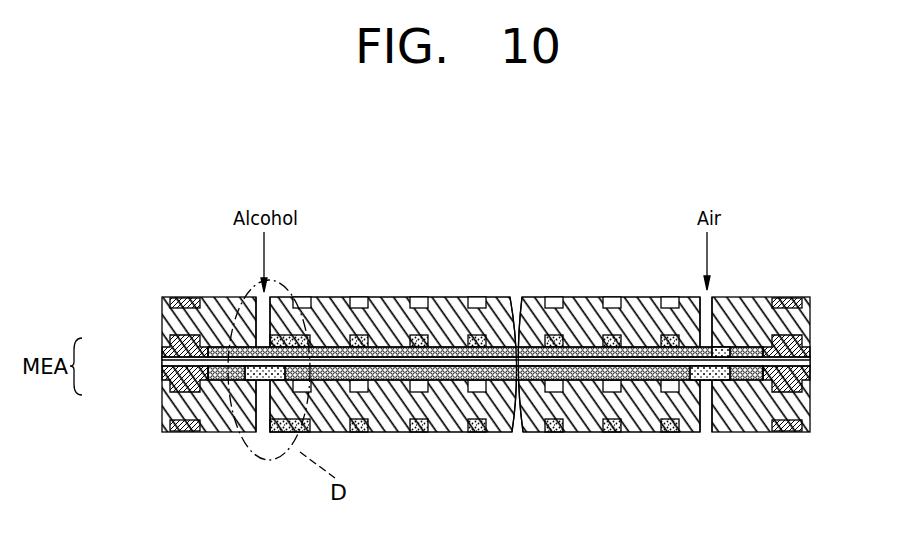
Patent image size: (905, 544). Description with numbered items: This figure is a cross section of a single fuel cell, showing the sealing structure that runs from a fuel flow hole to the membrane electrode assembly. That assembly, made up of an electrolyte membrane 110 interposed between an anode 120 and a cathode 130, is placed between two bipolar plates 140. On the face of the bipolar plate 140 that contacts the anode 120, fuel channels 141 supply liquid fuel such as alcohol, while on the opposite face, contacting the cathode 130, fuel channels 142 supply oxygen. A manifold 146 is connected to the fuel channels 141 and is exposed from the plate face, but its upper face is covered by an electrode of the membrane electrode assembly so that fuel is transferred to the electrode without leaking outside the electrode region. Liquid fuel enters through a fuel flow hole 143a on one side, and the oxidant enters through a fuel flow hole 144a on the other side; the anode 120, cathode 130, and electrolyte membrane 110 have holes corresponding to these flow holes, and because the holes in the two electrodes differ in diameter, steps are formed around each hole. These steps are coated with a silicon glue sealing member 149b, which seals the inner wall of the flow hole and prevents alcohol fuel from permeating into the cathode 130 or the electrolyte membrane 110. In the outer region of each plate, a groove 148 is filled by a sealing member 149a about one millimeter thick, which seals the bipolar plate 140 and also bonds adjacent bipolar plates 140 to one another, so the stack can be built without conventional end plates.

The electrolyte membrane 110 is at (172, 361).
The anode 120 is at (163, 352).
The cathode 130 is at (170, 381).
The bipolar plate 140 is at (173, 406).
The fuel channel 141 is at (553, 336).
The fuel channel 142 is at (477, 297).
The fuel flow hole 143a is at (268, 296).
The fuel flow hole 144a is at (712, 298).
The manifold 146 is at (312, 342).
The groove 148 is at (191, 297).
The sealing member 149a is at (804, 372).
The sealing member 149b is at (263, 380).